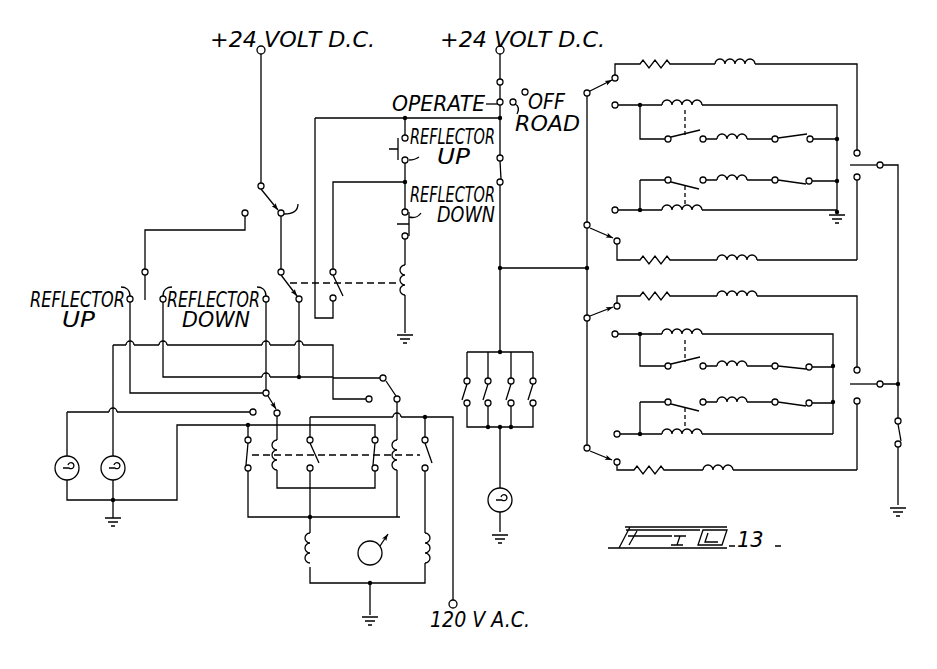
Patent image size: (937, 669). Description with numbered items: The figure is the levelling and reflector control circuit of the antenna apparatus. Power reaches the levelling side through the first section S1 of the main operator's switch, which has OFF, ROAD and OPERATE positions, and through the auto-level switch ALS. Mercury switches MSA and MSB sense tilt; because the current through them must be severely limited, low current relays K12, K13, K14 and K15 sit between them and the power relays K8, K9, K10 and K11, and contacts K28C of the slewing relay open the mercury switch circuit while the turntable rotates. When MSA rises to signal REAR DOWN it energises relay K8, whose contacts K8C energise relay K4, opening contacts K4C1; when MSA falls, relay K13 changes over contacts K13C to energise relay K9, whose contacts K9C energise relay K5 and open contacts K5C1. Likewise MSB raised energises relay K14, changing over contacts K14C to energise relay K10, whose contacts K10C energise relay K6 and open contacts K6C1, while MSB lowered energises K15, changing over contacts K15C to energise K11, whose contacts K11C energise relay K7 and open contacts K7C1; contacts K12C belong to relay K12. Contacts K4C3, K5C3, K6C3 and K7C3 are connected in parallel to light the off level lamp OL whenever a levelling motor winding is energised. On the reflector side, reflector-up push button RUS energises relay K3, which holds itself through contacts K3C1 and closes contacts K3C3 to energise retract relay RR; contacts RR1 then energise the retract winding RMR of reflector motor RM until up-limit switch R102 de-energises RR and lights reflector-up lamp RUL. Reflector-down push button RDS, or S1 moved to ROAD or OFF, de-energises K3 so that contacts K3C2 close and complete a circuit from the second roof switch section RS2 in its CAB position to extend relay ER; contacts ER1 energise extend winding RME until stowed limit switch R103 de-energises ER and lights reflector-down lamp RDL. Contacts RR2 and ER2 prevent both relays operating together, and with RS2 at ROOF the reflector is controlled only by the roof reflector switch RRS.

The second section of roof switch RS2 is at (240, 195).
The ROOF position ROOF is at (215, 214).
The CAB position CAB is at (298, 197).
The roof reflector switch RRS is at (120, 279).
The contacts K3C3 is at (262, 278).
The contacts K3C2 is at (295, 302).
The holding contacts K3C1 is at (362, 294).
The relay K3 is at (425, 284).
The up-limit switch R102 is at (287, 400).
The stowed limit switch R103 is at (412, 387).
The reflector-up lamp RUL is at (47, 459).
The reflector-down lamp RDL is at (135, 459).
The contacts RR2 is at (223, 460).
The retract relay RR is at (270, 468).
The contacts ER2 is at (336, 450).
The contacts RR1 is at (353, 461).
The extend relay ER is at (402, 470).
The contacts ER1 is at (432, 452).
The retract winding RMR is at (331, 551).
The extend winding RME is at (405, 558).
The reflector motor RM is at (370, 543).
The off level lamp OL is at (518, 501).
The switch section S1 is at (503, 80).
The reflector-up push button switch RUS is at (383, 157).
The reflector-down push button switch RDS is at (385, 225).
The auto-level switch ALS is at (503, 164).
The contacts K4C3 is at (463, 378).
The contacts K5C3 is at (486, 360).
The contacts K6C3 is at (513, 362).
The contacts K7C3 is at (556, 392).
The contacts K15C is at (586, 77).
The relay K14 is at (699, 54).
The relay K11 is at (661, 94).
The contacts K11C is at (675, 128).
The relay K7 is at (736, 127).
The contacts K6C1 is at (798, 128).
The contacts K10C is at (680, 173).
The relay K6 is at (736, 170).
The contacts K7C1 is at (798, 171).
The relay K10 is at (658, 222).
The contacts K14C is at (617, 229).
The relay K15 is at (700, 251).
The relay K12 is at (701, 287).
The contacts K13C is at (619, 317).
The relay K9 is at (658, 321).
The contacts K9C is at (678, 366).
The relay K5 is at (736, 353).
The first pair of contacts K4C1 is at (795, 355).
The contacts K8C is at (685, 394).
The relay K4 is at (736, 390).
The contacts K5C1 is at (795, 392).
The relay K8 is at (658, 446).
The relay K13 is at (694, 457).
The contacts K12C is at (589, 462).
The mercury switch MSB is at (882, 161).
The mercury switch MSA is at (882, 385).
The contacts K28C is at (893, 437).